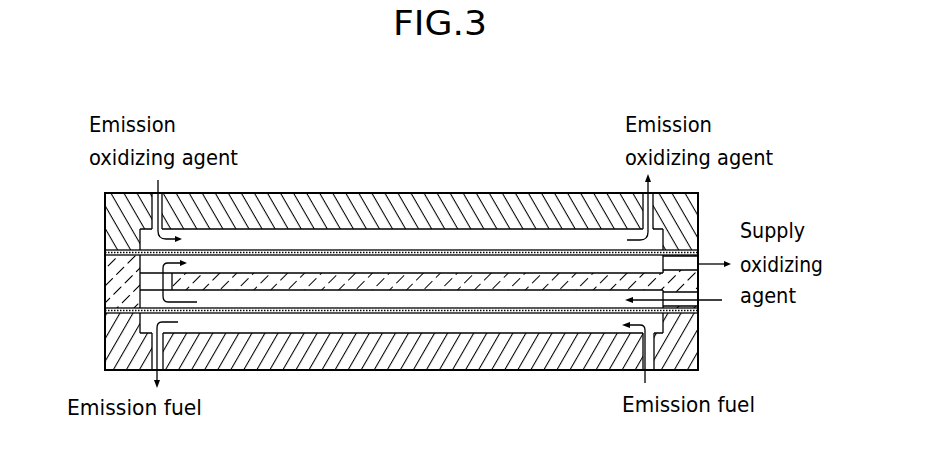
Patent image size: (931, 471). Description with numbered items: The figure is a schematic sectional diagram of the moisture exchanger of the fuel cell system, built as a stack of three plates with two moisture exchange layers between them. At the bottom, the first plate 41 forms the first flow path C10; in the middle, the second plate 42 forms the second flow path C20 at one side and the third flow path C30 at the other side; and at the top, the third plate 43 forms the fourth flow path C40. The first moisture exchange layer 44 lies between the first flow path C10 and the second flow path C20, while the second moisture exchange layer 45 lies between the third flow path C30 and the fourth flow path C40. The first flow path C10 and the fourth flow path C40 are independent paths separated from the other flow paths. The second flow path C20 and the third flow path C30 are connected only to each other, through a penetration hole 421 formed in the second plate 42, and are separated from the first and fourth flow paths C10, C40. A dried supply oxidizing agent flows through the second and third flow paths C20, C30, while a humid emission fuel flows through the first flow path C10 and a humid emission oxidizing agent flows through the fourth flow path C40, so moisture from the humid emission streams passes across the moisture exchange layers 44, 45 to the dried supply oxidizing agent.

The first plate 41 is at (110, 348).
The second plate 42 is at (110, 296).
The penetration hole 421 is at (146, 273).
The third plate 43 is at (110, 221).
The first moisture exchange layer 44 is at (513, 313).
The second moisture exchange layer 45 is at (513, 250).
The first flow path C10 is at (415, 323).
The second flow path C20 is at (310, 300).
The third flow path C30 is at (303, 262).
The fourth flow path C40 is at (415, 238).